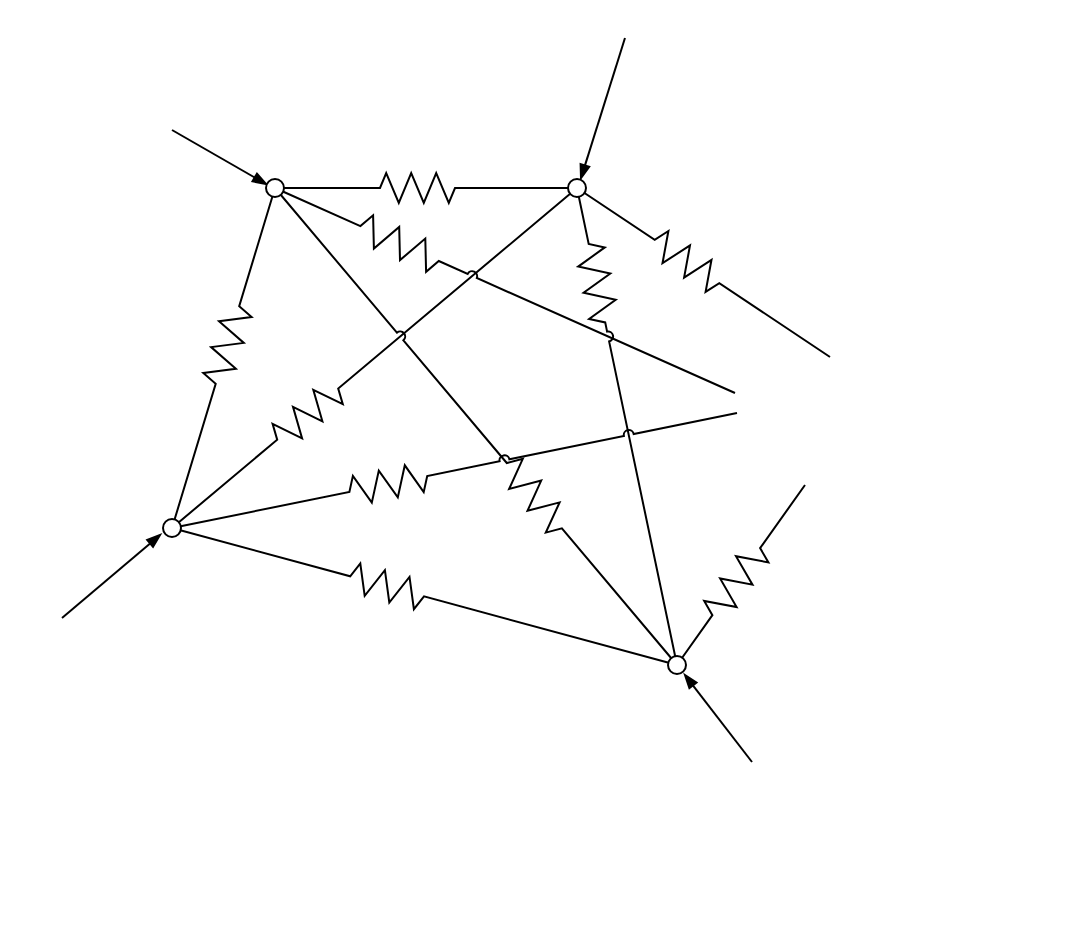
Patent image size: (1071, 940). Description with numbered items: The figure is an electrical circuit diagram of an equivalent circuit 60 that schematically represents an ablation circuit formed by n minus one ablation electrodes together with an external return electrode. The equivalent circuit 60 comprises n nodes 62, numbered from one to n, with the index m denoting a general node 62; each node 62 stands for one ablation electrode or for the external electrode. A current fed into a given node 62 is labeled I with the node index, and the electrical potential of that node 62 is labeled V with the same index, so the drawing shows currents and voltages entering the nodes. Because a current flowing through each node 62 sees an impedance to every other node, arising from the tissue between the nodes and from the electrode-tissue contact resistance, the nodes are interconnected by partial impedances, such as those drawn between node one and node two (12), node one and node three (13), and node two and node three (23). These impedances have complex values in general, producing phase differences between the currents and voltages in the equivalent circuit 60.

The equivalent circuit 60 is at (752, 75).
The node 62 is at (164, 524).
The impedance Z12 between node 1 and node 2 12 is at (237, 358).
The impedance Z13 between node 1 and node 3 13 is at (374, 358).
The impedance Z23 between node 2 and node 3 23 is at (426, 167).